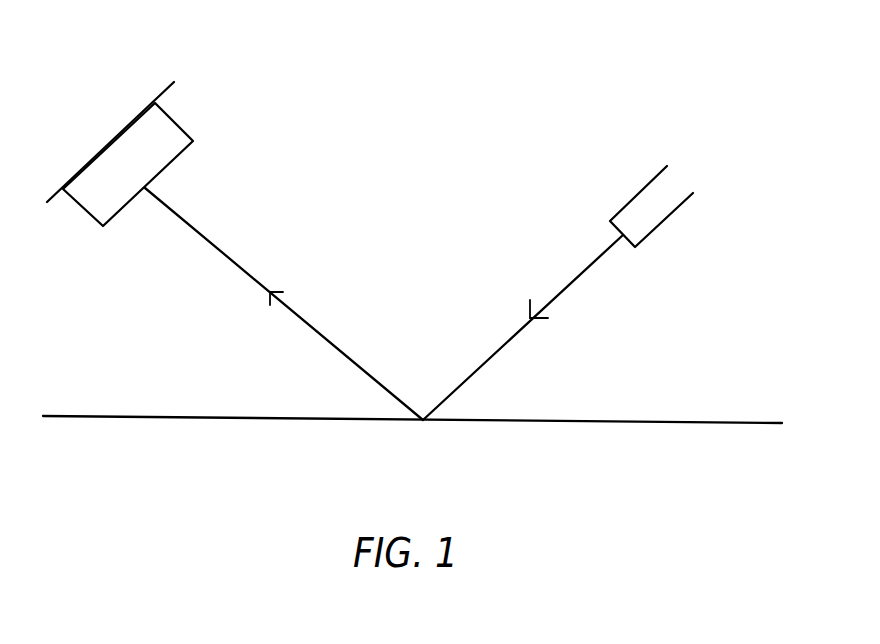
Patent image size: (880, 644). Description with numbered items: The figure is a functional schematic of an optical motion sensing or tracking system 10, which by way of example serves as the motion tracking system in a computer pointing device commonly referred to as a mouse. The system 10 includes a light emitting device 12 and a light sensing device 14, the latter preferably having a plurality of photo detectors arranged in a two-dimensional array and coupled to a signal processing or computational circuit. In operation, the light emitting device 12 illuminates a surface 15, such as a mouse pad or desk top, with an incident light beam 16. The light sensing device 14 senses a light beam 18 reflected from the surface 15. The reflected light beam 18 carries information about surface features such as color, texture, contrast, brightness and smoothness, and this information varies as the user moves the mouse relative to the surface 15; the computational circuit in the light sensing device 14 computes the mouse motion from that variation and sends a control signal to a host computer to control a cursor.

The optical motion tracking system 10 is at (435, 499).
The light emitting device 12 is at (692, 182).
The light sensing device 14 is at (187, 104).
The surface 15 is at (693, 423).
The incident light beam 16 is at (522, 333).
The reflected light beam 18 is at (243, 268).